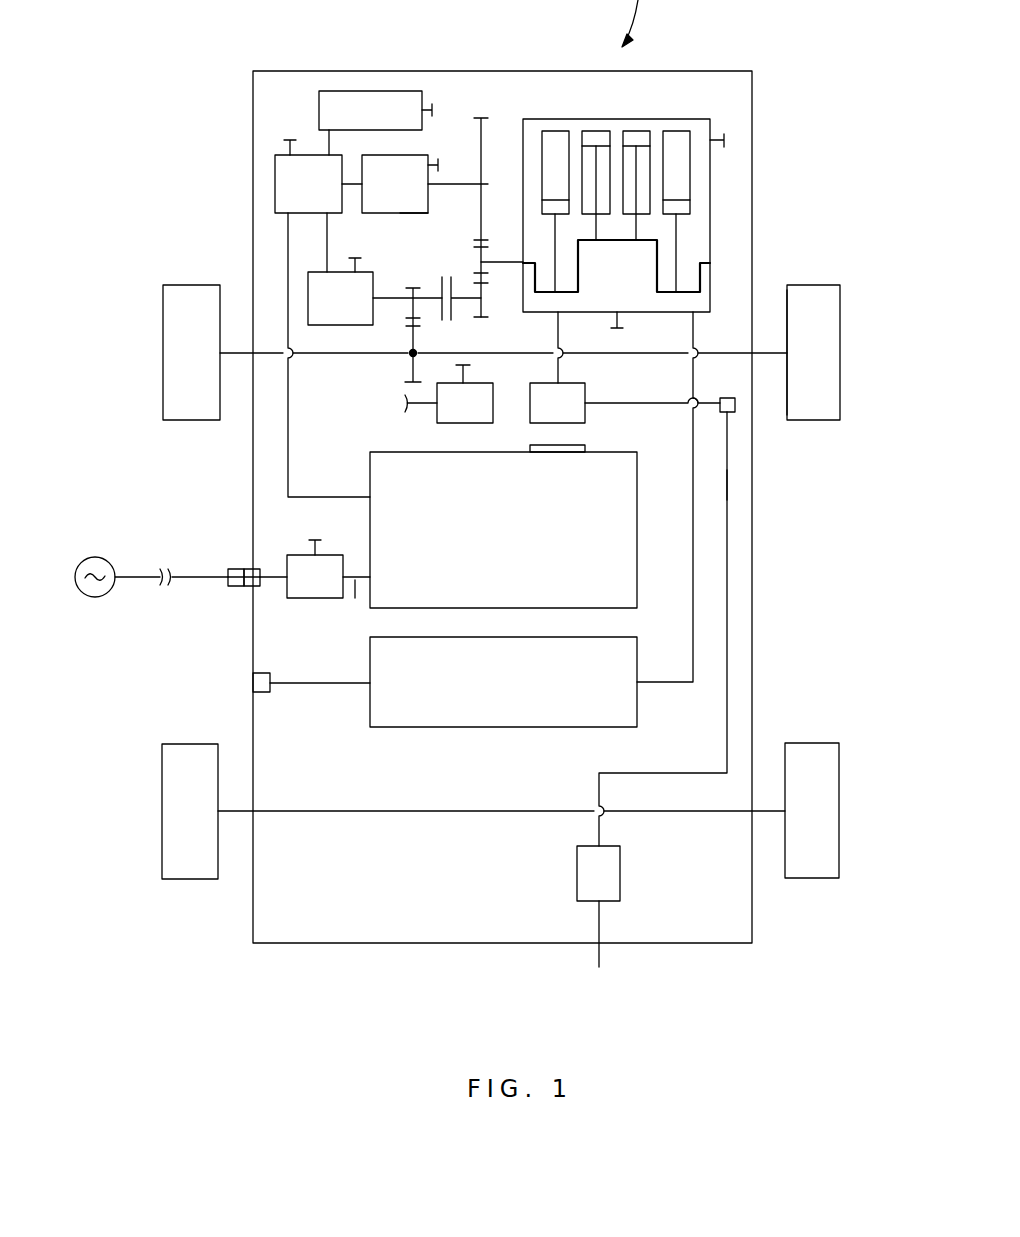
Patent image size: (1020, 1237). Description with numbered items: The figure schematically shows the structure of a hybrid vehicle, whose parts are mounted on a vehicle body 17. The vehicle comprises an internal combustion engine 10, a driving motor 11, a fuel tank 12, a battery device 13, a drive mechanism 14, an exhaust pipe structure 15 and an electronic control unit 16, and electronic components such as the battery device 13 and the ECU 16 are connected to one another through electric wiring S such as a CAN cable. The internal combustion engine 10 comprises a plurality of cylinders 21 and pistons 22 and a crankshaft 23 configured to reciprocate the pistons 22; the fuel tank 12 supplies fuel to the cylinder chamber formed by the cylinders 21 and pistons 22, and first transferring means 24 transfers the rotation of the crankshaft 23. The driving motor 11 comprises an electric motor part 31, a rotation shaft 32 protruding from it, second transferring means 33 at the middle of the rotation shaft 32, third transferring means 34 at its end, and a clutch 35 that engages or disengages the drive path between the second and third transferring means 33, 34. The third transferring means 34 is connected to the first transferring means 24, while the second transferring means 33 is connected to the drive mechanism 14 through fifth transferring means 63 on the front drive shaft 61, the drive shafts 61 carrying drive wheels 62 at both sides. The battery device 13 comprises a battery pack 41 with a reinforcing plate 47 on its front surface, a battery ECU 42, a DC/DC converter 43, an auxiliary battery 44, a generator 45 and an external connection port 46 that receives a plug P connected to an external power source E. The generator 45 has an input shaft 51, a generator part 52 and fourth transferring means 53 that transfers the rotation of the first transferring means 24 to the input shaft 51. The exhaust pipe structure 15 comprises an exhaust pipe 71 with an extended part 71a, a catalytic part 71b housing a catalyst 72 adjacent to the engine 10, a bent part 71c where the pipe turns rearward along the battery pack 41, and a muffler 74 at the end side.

The internal combustion engine 10 is at (665, 197).
The driving motor 11 is at (352, 306).
The fuel tank 12 is at (637, 712).
The battery device 13 is at (320, 587).
The drive mechanism 14 is at (816, 274).
The exhaust pipe structure 15 is at (733, 488).
The electronic control unit (ECU) 16 is at (493, 400).
The vehicle body 17 is at (752, 576).
The cylinders 21 is at (672, 131).
The pistons 22 is at (593, 150).
The crankshaft 23 is at (583, 266).
The first transferring means 24 is at (481, 252).
The electric motor part 31 is at (320, 327).
The rotation shaft 32 is at (388, 298).
The second transferring means 33 is at (413, 310).
The third transferring means 34 is at (481, 308).
The clutch 35 is at (446, 277).
The battery pack 41 is at (637, 525).
The battery ECU 42 is at (296, 555).
The DC/DC converter 43 is at (275, 185).
The auxiliary battery 44 is at (345, 91).
The generator 45 is at (389, 155).
The external connection port 46 is at (247, 569).
The reinforcing plate 47 is at (580, 445).
The input shaft 51 is at (455, 184).
The generator part 52 is at (420, 213).
The fourth transferring means 53 is at (481, 150).
The drive shafts 61 is at (770, 352).
The drive wheels 62 is at (163, 330).
The fifth transferring means 63 is at (410, 377).
The exhaust pipe 71 is at (698, 601).
The extended part 71a is at (727, 530).
The catalytic part 71b is at (590, 415).
The bent part 71c is at (727, 398).
The catalyst 72 is at (575, 383).
The muffler 74 is at (620, 866).
The external power source E is at (95, 557).
The plug P is at (228, 569).
The electric wiring S is at (433, 110).